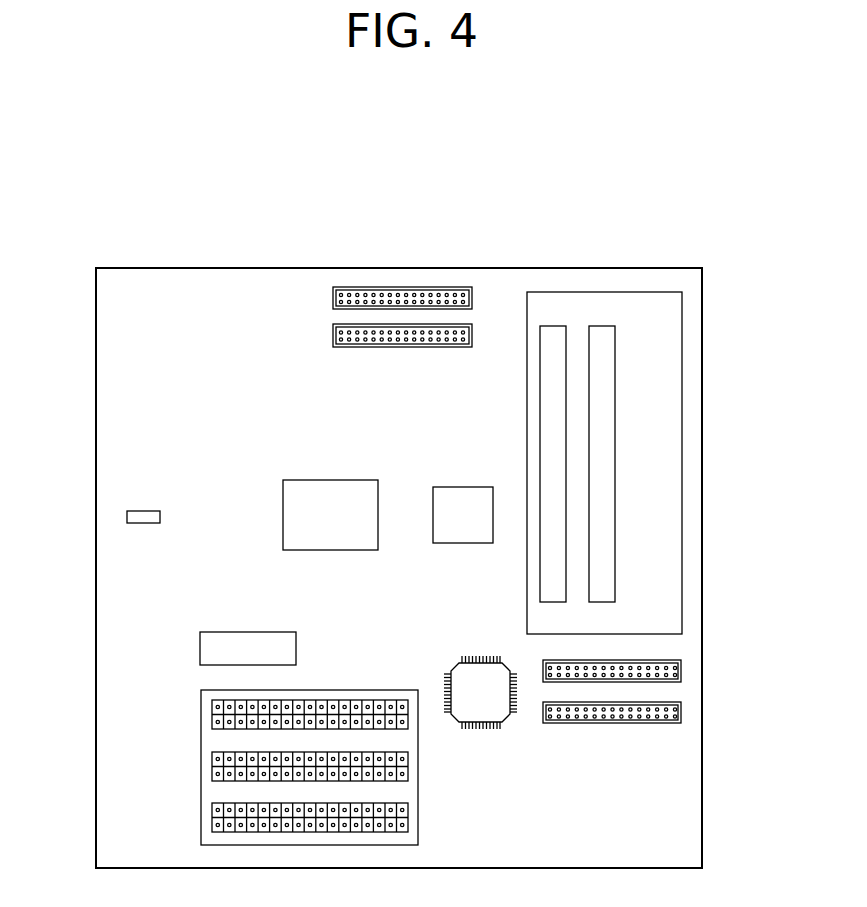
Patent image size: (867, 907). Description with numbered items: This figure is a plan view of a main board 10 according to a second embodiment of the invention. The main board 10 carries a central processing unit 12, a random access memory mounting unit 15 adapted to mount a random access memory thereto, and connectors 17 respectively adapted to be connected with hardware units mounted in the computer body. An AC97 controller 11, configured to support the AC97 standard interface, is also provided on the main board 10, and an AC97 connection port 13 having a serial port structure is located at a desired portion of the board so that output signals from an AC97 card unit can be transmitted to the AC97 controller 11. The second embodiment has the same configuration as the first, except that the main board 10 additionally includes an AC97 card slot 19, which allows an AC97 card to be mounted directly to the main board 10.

The main board 10 is at (116, 224).
The AC97 controller 11 is at (460, 487).
The central processing unit 12 is at (329, 480).
The AC97 connection port 13 is at (128, 518).
The random access memory mounting unit 15 is at (682, 499).
The connectors 17 is at (681, 670).
The AC97 card slot 19 is at (247, 632).